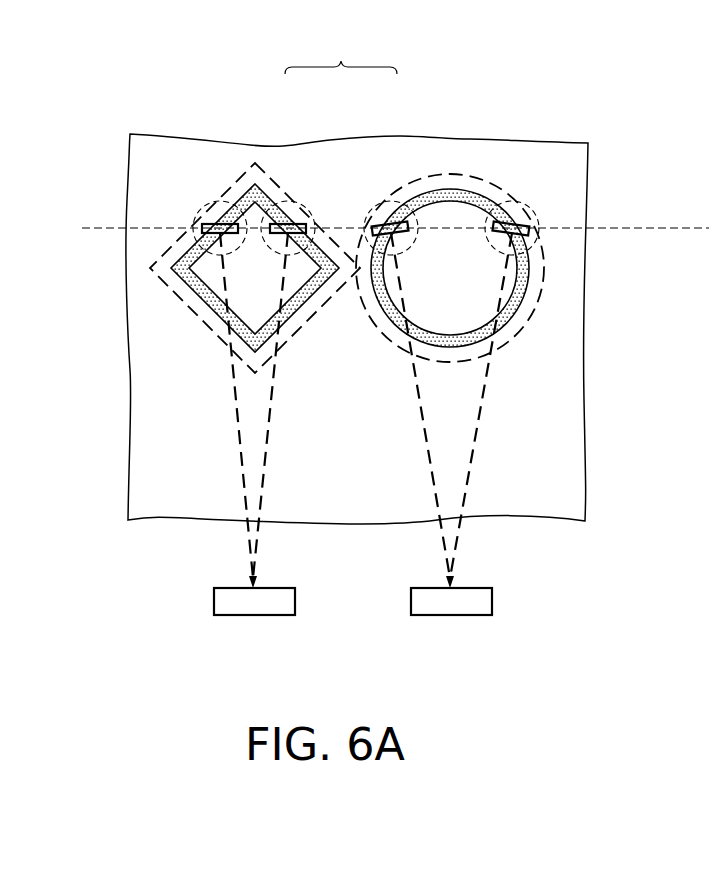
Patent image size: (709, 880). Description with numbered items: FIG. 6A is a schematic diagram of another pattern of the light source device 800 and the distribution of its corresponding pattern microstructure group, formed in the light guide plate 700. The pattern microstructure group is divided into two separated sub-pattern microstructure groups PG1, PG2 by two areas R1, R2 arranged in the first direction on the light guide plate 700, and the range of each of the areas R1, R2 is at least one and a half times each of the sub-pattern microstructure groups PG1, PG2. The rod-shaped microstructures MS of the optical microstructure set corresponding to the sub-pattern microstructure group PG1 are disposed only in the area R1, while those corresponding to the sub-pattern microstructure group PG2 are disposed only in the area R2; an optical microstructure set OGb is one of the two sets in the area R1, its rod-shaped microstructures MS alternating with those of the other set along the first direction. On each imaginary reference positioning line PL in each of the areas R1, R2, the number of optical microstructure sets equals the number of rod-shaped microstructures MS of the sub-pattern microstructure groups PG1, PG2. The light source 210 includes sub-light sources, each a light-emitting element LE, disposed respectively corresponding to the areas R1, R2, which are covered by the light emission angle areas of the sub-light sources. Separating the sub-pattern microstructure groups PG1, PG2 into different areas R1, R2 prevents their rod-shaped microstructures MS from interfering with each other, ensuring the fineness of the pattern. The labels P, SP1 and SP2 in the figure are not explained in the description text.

The light guide plate 700 is at (558, 452).
The light source device 800 is at (645, 594).
The light source 210 is at (515, 655).
The pixel P is at (341, 52).
The first sub-pixel SP1 is at (260, 181).
The second sub-pixel SP2 is at (425, 178).
The sub-pattern microstructure group PG1 is at (273, 251).
The sub-pattern microstructure group PG2 is at (413, 248).
The rod-shaped microstructure MS is at (286, 224).
The optical microstructure set OGb is at (708, 316).
The imaginary reference positioning line PL is at (379, 227).
The area R1 is at (225, 305).
The area R2 is at (487, 325).
The light-emitting element LE is at (270, 603).